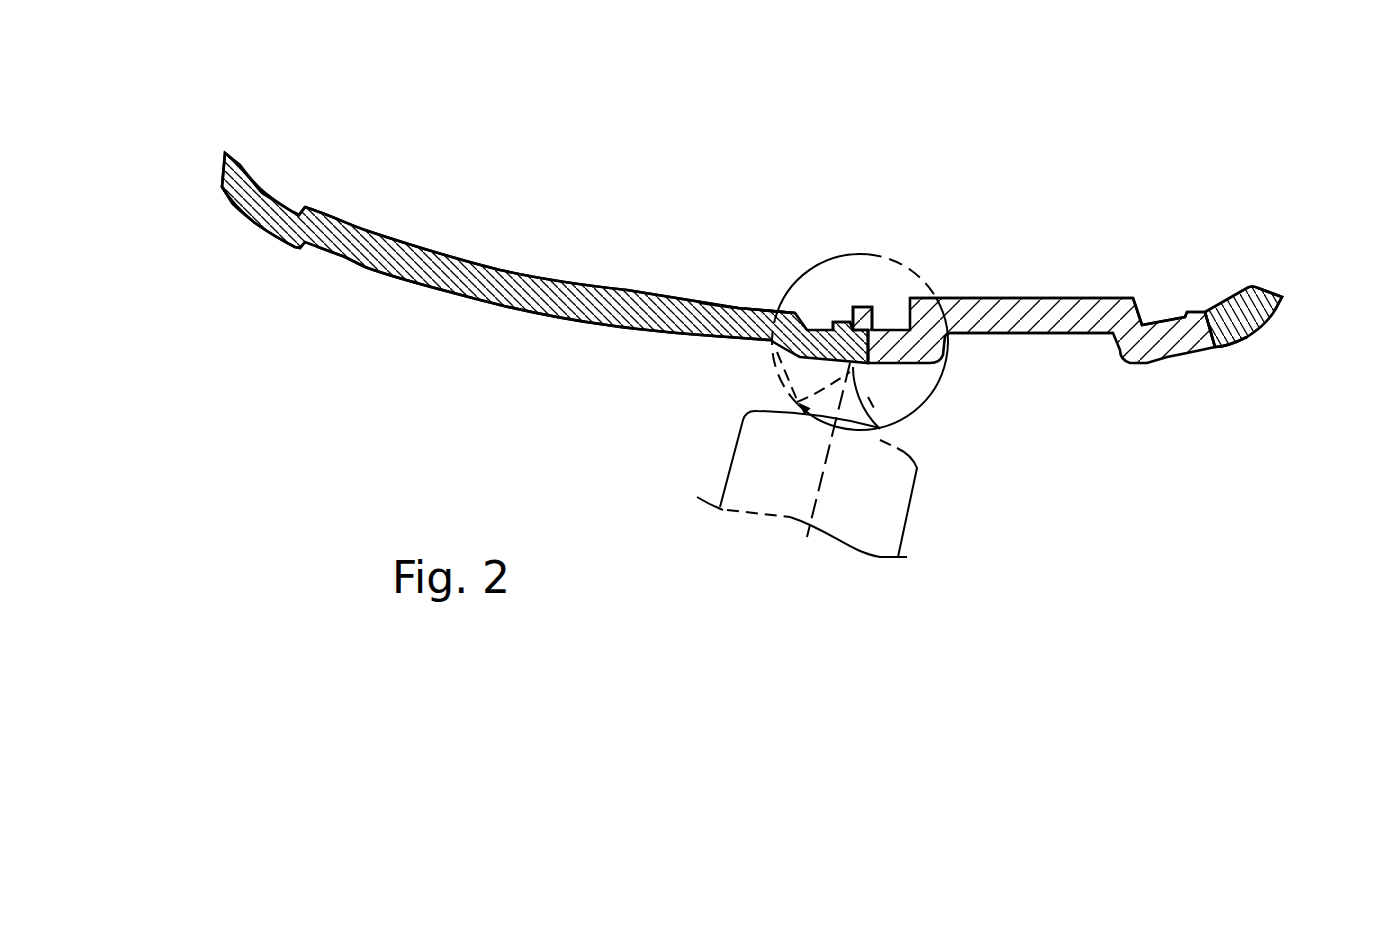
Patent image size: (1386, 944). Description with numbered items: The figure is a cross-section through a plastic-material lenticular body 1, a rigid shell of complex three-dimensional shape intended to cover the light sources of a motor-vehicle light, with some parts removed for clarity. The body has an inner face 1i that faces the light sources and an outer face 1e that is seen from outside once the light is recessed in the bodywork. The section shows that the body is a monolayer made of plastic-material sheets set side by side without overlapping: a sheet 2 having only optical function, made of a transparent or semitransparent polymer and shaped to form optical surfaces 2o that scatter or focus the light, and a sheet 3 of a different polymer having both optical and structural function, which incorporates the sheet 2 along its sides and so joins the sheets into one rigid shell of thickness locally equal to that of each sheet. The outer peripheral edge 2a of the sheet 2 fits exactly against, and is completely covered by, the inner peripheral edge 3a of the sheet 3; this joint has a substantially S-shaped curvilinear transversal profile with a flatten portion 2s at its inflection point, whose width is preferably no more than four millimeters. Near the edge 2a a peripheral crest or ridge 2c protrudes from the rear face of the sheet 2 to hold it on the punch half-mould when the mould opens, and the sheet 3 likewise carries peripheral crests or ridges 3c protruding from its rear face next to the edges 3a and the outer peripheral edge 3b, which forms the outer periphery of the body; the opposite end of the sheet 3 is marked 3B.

The lenticular body 1 is at (378, 360).
The inner face 1i is at (627, 290).
The outer face 1e is at (607, 326).
The plastic-material sheet with optical function only 2 is at (992, 303).
The outer peripheral edge 2a is at (738, 308).
The peripheral crest or ridge 2c is at (863, 307).
The optical surfaces 2o is at (1072, 297).
The flatten portion 2s is at (880, 429).
The plastic-material sheet with optical and structural function 3 is at (530, 287).
The inner peripheral edge 3a is at (870, 348).
The outer peripheral edge 3b is at (1263, 290).
The section of cover 3B is at (213, 167).
The peripheral crests or ridges 3c is at (842, 326).